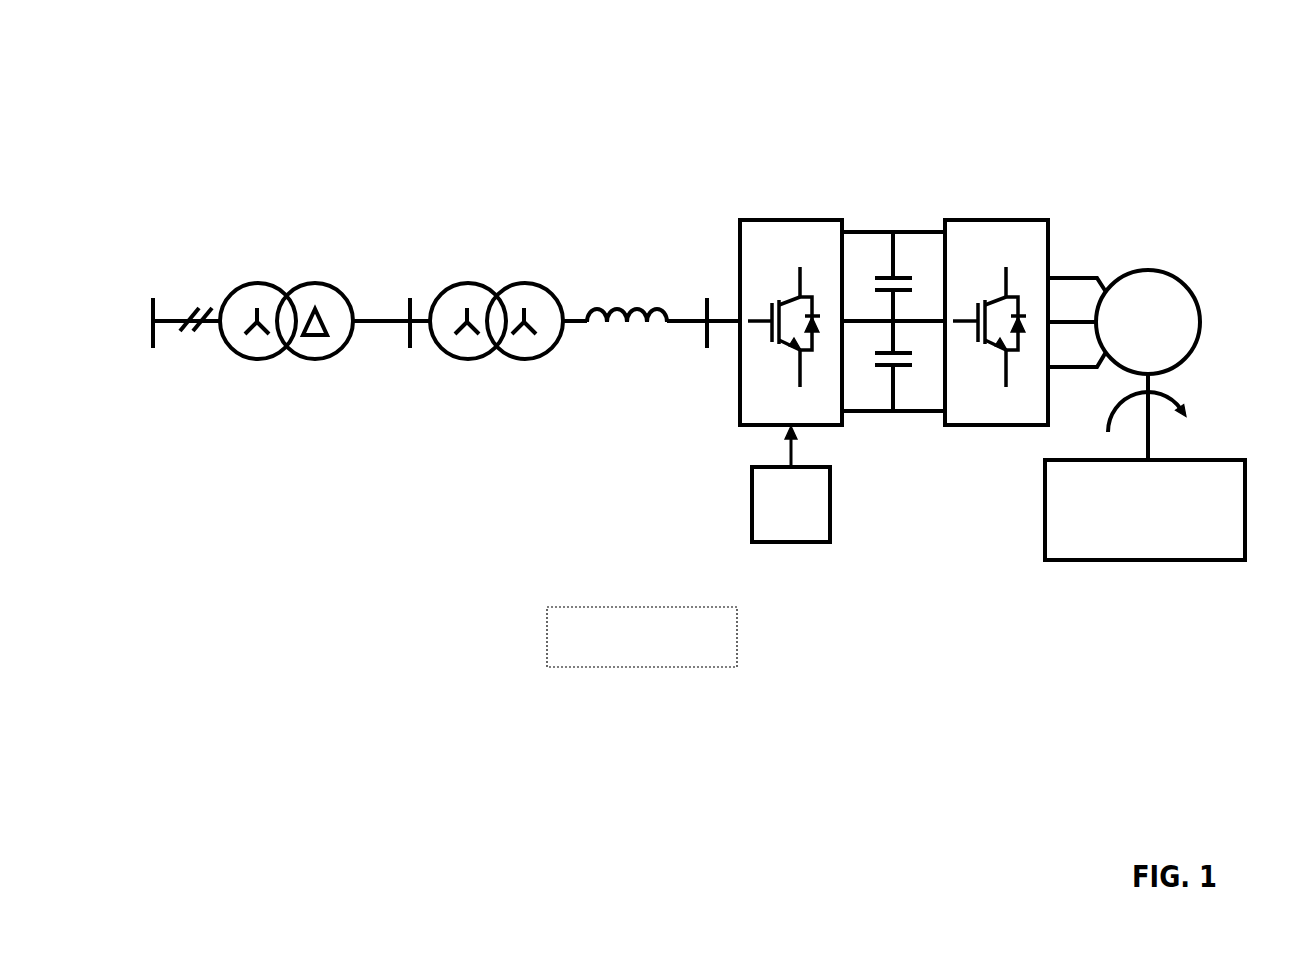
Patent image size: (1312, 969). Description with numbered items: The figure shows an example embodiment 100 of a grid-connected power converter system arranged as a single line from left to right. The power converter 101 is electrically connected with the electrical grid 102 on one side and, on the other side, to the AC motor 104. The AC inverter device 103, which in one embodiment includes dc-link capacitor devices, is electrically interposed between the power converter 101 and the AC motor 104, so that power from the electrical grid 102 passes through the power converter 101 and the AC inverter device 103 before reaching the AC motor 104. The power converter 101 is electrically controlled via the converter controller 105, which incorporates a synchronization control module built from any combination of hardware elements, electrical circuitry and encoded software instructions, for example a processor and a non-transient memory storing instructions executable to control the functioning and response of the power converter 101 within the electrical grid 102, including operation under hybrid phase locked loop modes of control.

The example embodiment 100 is at (1297, 76).
The grid-connected power converter 101 is at (787, 407).
The electrical grid 102 is at (158, 310).
The AC inverter device 103 is at (991, 407).
The AC motor 104 is at (1160, 366).
The converter controller 105 is at (740, 405).